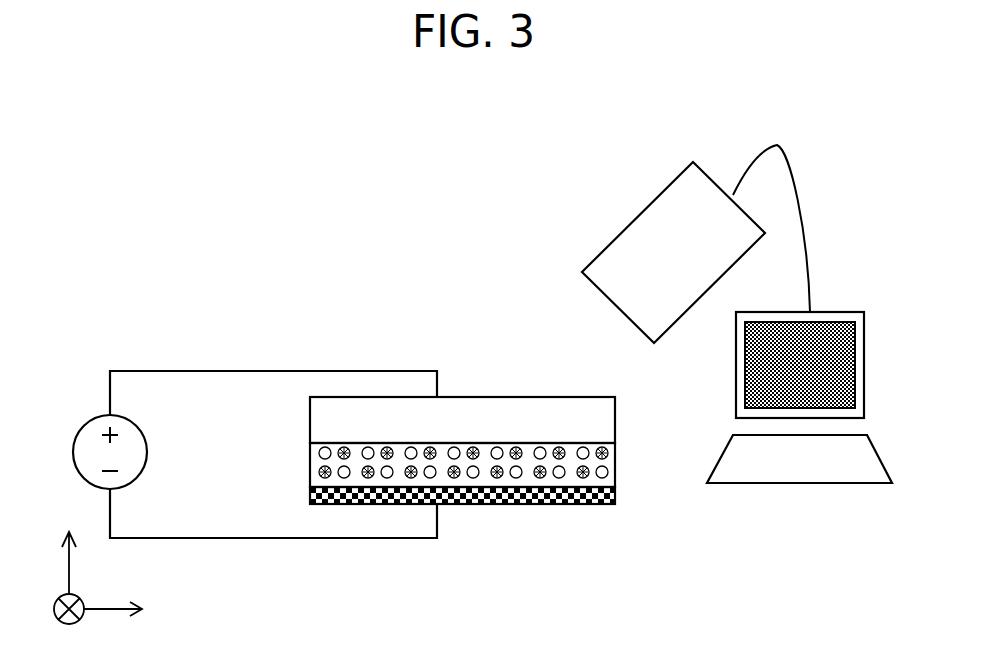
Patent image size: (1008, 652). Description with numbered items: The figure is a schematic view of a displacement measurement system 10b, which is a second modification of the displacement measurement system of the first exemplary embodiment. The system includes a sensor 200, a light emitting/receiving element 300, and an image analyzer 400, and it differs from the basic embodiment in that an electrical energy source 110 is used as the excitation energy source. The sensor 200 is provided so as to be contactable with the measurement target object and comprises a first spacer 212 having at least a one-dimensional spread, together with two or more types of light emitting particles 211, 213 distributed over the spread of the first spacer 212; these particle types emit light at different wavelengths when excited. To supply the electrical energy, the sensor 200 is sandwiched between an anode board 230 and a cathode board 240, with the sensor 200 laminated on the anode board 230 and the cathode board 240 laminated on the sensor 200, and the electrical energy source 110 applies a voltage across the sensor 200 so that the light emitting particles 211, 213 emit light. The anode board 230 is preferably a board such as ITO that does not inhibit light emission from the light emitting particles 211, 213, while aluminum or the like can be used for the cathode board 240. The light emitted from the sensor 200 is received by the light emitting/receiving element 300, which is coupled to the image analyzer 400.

The displacement measurement system 10b is at (458, 109).
The electrical energy source 110 is at (93, 417).
The sensor 200 is at (423, 519).
The light emitting particles 211 is at (541, 487).
The first spacer 212 is at (335, 477).
The light emitting particles 213 is at (474, 478).
The anode board 230 is at (615, 420).
The cathode board 240 is at (615, 497).
The light emitting/receiving element 300 is at (620, 228).
The image analyzer 400 is at (818, 308).